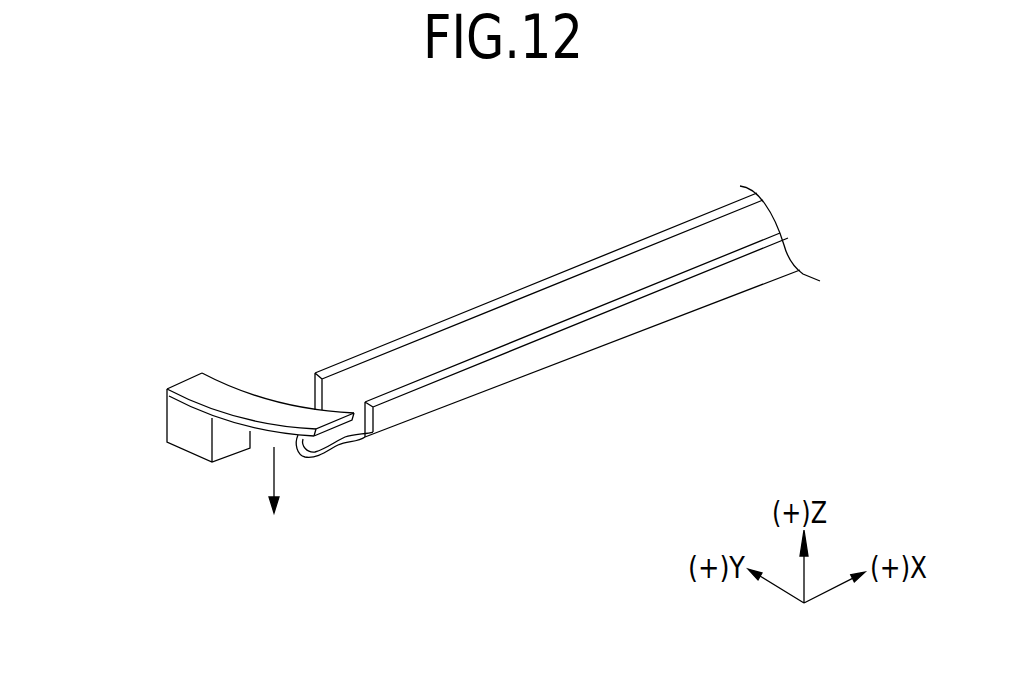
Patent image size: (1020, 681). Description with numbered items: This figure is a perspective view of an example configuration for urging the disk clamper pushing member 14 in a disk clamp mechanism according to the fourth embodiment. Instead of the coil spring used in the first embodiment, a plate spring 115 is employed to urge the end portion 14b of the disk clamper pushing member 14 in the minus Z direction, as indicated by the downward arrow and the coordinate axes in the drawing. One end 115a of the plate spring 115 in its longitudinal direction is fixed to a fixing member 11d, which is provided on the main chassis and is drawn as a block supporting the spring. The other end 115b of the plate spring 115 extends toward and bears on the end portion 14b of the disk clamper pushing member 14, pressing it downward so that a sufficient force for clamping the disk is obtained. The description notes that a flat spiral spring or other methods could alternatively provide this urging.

The disk clamper pushing member 14 is at (632, 268).
The end portion of disk clamper pushing member 14b is at (341, 449).
The fixing member 11d is at (183, 424).
The plate spring 115 is at (246, 405).
The end of plate spring 115a is at (292, 410).
The other end of plate spring 115b is at (195, 385).